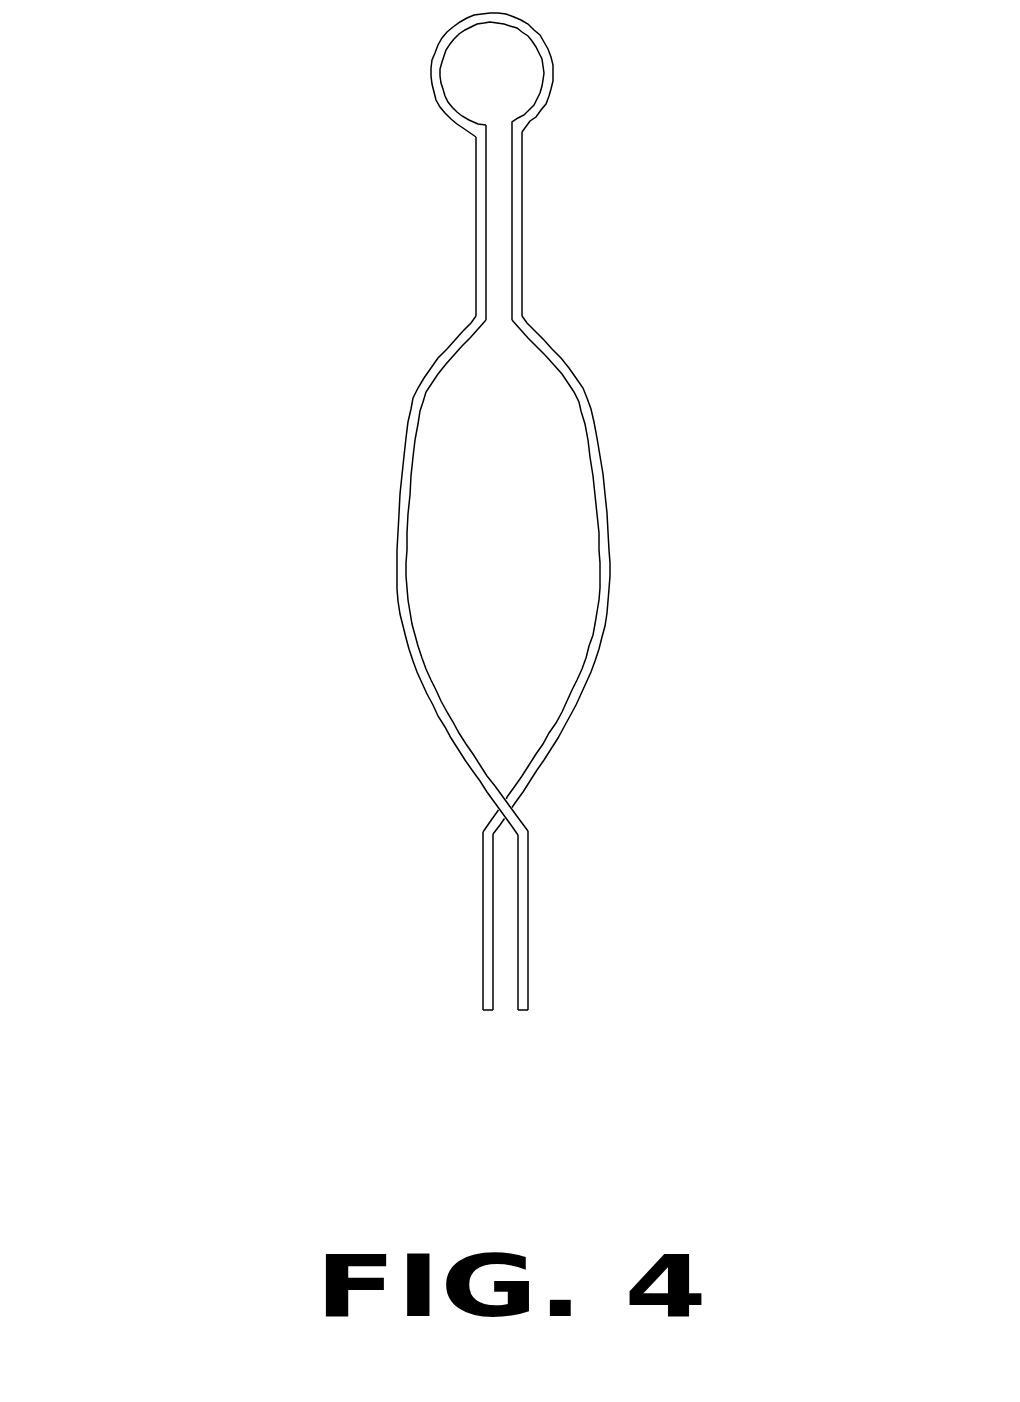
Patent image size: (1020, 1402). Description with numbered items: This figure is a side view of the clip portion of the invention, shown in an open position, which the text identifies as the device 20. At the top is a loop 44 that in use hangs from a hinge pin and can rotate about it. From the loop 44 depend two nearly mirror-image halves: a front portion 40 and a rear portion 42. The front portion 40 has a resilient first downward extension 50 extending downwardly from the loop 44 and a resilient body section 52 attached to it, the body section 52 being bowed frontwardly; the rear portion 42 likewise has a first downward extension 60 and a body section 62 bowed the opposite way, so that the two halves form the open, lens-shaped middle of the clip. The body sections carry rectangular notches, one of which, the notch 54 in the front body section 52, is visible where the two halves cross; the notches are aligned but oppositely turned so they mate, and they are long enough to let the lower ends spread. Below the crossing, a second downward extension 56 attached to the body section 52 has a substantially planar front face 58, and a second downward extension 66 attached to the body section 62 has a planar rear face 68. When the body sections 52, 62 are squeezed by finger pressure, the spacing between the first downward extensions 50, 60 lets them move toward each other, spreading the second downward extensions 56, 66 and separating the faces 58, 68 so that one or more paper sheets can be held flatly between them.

The surgical instrument 20 is at (406, 560).
The front portion 40 is at (378, 409).
The rear portion 42 is at (631, 416).
The loop 44 is at (523, 65).
The first downward extension 50 is at (476, 229).
The first downward extension 60 is at (522, 197).
The body section 52 is at (403, 472).
The body section 62 is at (599, 481).
The rectangular notch 54 is at (505, 808).
The second downward extension 66 is at (484, 907).
The second downward extension 56 is at (529, 898).
The planar rear face 68 is at (495, 936).
The front face 58 is at (519, 948).